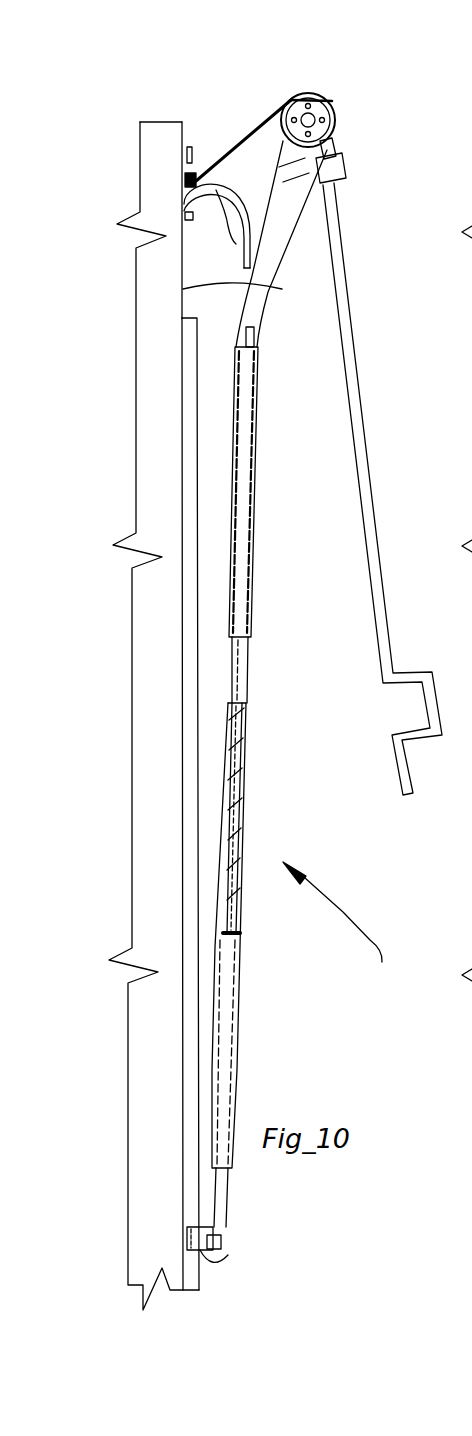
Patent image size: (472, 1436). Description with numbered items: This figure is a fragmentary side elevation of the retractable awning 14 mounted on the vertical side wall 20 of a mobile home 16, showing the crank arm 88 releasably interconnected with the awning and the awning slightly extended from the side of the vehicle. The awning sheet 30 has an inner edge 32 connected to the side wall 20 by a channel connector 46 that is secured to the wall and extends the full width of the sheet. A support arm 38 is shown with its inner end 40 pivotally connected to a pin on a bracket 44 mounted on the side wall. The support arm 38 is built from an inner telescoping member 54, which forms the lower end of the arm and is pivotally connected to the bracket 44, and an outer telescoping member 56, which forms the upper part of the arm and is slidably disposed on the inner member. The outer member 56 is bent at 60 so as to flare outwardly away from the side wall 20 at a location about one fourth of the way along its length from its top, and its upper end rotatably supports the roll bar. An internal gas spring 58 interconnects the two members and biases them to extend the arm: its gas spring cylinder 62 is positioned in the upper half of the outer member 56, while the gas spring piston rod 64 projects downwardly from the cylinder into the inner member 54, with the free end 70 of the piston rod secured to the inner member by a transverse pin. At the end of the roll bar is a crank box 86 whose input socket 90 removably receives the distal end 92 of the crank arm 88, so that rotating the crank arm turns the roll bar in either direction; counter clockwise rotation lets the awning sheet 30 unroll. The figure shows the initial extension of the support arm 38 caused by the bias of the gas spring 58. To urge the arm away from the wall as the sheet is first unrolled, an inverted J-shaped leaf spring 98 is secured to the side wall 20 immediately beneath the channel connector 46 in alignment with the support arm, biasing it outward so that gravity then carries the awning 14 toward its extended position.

The retractable awning 14 is at (332, 921).
The mobile home 16 is at (135, 1044).
The vertical side wall 20 is at (255, 244).
The awning sheet 30 is at (260, 126).
The inner edge 32 is at (198, 176).
The support arm 38 is at (246, 703).
The inner end 40 is at (226, 1235).
The bracket 44 is at (222, 1262).
The channel connector 46 is at (196, 148).
The inner telescoping member 54 is at (238, 1072).
The outer telescoping member 56 is at (278, 218).
The gas spring 58 is at (240, 520).
The bend 60 is at (247, 320).
The gas spring cylinder 62 is at (258, 464).
The gas spring piston rod 64 is at (248, 670).
The free end 70 is at (244, 934).
The crank box 86 is at (326, 104).
The crank arm 88 is at (372, 523).
The input socket 90 is at (340, 160).
The distal end 92 is at (340, 186).
The leaf spring 98 is at (236, 238).